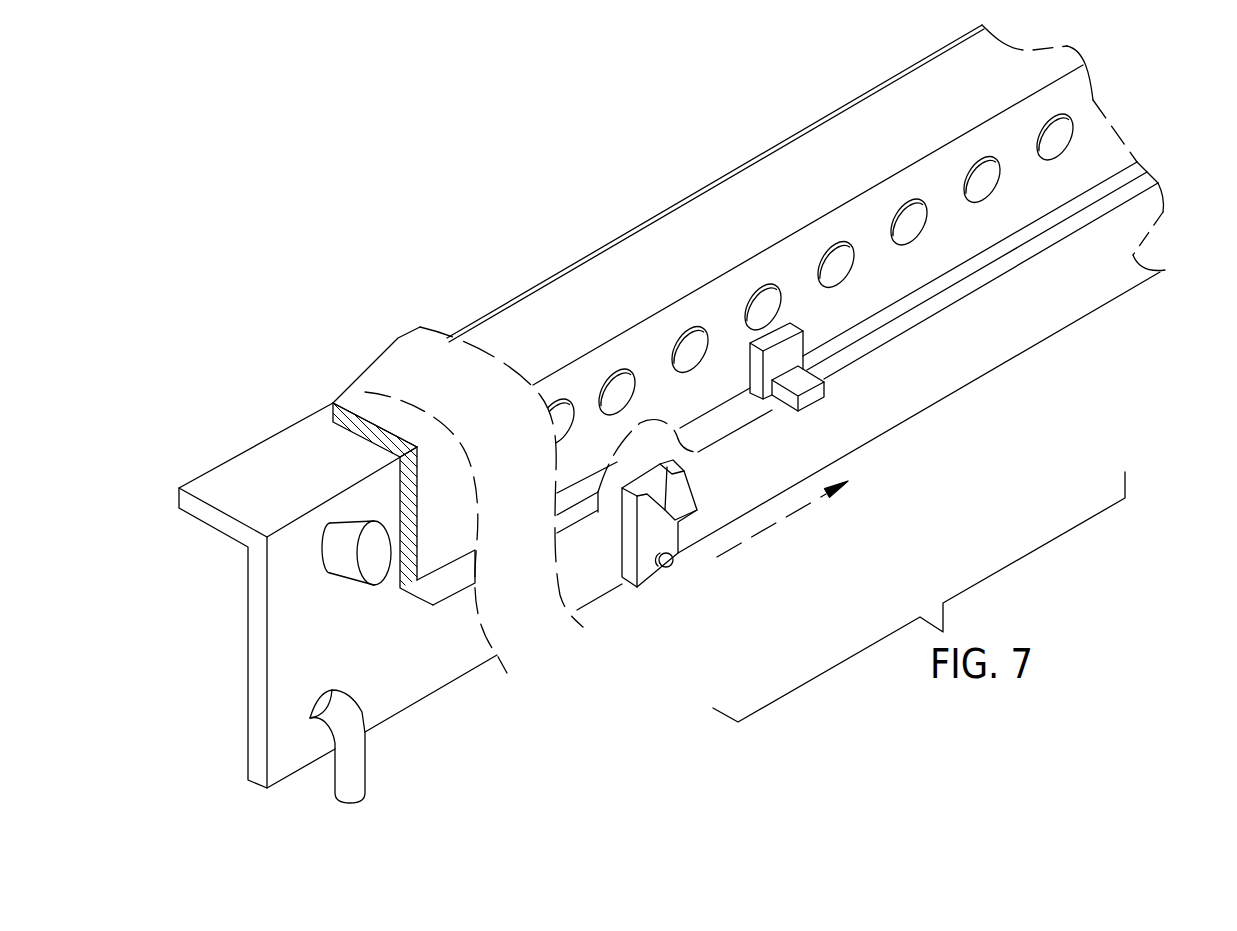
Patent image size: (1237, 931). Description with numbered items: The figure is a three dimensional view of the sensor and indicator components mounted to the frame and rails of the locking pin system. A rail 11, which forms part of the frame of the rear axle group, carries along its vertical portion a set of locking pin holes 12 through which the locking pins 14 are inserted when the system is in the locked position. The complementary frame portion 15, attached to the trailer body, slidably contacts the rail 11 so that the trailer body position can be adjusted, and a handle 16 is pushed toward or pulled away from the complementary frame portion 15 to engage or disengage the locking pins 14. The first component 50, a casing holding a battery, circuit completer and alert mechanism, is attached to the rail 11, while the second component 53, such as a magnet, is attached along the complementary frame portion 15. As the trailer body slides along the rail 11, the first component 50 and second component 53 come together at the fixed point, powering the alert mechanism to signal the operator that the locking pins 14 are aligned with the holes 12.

The rails 11 is at (832, 135).
The locking pin holes 12 is at (1065, 112).
The locking pins 14 is at (343, 562).
The complementary frame portion 15 is at (1073, 307).
The handle 16 is at (337, 788).
The first component 50 is at (678, 553).
The second component 53 is at (826, 383).